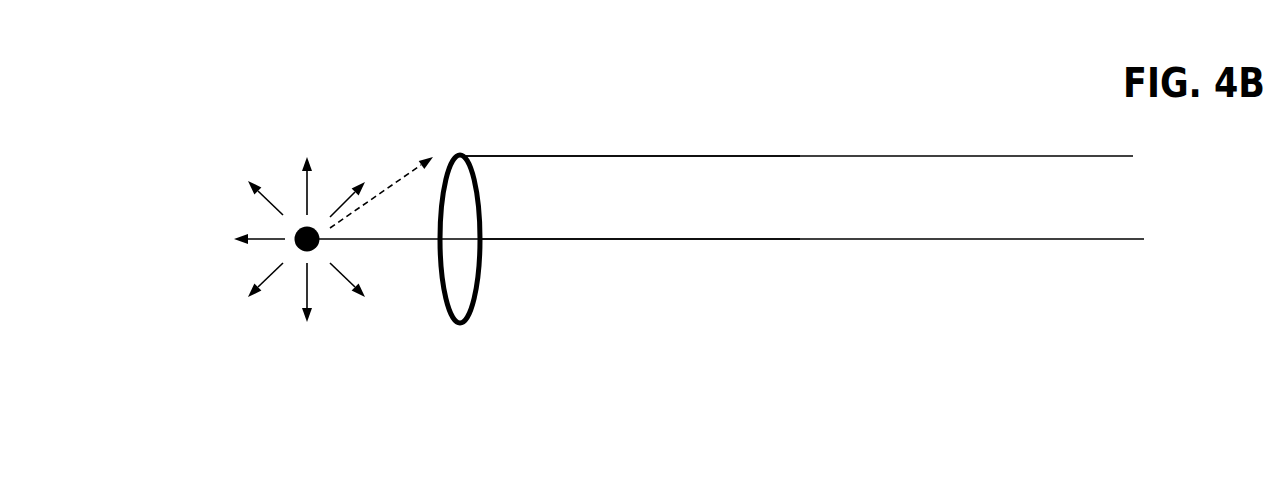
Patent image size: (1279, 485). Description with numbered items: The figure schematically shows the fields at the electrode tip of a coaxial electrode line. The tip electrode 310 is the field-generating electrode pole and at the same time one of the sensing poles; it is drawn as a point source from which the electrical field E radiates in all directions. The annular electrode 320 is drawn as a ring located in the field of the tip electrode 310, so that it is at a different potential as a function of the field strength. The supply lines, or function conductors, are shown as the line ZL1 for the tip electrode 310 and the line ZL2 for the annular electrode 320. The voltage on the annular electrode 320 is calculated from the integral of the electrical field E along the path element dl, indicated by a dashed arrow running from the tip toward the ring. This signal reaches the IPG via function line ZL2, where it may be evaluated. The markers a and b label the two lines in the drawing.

The tip electrode 310 is at (293, 225).
The annular electrode 320 is at (472, 317).
The function conductor ZL1 is at (725, 219).
The function conductor ZL2 is at (799, 134).
The point a is at (633, 78).
The point b is at (640, 308).
The path element dl is at (381, 169).
The electrical field E is at (347, 189).